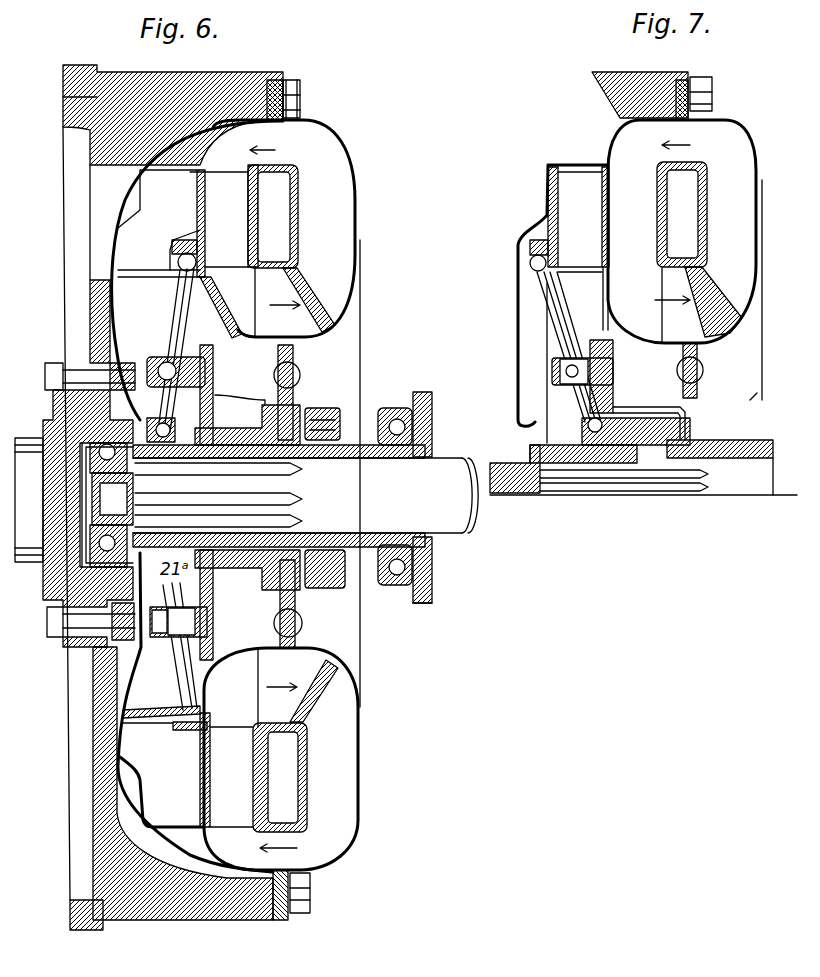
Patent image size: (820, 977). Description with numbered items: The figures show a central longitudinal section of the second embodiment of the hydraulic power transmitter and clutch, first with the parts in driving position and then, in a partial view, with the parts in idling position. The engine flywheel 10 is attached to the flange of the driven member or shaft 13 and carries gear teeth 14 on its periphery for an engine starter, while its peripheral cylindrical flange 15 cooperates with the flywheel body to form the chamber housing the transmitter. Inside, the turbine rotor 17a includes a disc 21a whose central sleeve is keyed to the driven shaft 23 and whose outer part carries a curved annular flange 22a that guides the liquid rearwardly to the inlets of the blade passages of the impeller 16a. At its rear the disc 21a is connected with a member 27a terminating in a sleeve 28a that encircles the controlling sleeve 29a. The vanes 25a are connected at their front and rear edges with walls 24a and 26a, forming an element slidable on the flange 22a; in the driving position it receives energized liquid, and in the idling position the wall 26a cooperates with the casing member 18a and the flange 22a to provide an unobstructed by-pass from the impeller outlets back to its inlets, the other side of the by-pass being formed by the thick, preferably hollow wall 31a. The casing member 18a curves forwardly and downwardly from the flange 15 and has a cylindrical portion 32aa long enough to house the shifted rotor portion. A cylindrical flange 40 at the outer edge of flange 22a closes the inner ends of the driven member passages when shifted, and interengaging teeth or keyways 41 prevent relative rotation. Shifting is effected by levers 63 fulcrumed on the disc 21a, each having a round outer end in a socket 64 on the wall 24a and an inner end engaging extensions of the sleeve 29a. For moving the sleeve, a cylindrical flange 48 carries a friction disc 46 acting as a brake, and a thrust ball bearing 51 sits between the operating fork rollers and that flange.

In FIG. 6, the engine flywheel 10 is at (90, 303).
In FIG. 6, the driven member or shaft 13 is at (26, 445).
In FIG. 6, the gear teeth 14 is at (92, 72).
In FIG. 6, the peripheral cylindrical flange 15 is at (258, 72).
In FIG. 6, the impeller 16a is at (284, 228).
In FIG. 6, the turbine rotor 17a is at (219, 219).
In FIG. 6, the casing member 18a is at (207, 142).
In FIG. 7, the casing member 18a is at (627, 133).
In FIG. 6, the disc 21a is at (207, 372).
In FIG. 7, the disc 21a is at (616, 366).
In FIG. 6, the curved annular flange 22a is at (240, 322).
In FIG. 7, the curved annular flange 22a is at (613, 308).
In FIG. 6, the driven shaft 23 is at (452, 524).
In FIG. 7, the driven shaft 23 is at (643, 470).
In FIG. 6, the wall 24a is at (197, 220).
In FIG. 7, the wall 24a is at (558, 207).
In FIG. 6, the vanes 25a is at (217, 188).
In FIG. 6, the wall 26a is at (248, 182).
In FIG. 7, the wall 26a is at (602, 200).
In FIG. 6, the member 27a is at (265, 405).
In FIG. 7, the member 27a is at (683, 423).
In FIG. 6, the sleeve 28a is at (347, 440).
In FIG. 6, the controlling sleeve 29a is at (369, 550).
In FIG. 7, the controlling sleeve 29a is at (763, 440).
In FIG. 6, the wall 31a is at (298, 180).
In FIG. 7, the wall 31a is at (682, 214).
In FIG. 7, the cylindrical portion 32aa is at (584, 164).
In FIG. 6, the cylindrical flange 40 is at (150, 278).
In FIG. 6, the interengaging teeth or keyways 41 is at (208, 724).
In FIG. 6, the friction disc 46 is at (432, 590).
In FIG. 6, the cylindrical flange 48 is at (421, 604).
In FIG. 6, the thrust ball bearing 51 is at (397, 419).
In FIG. 6, the levers 63 is at (178, 322).
In FIG. 7, the levers 63 is at (550, 327).
In FIG. 6, the socket 64 is at (176, 260).
In FIG. 7, the socket 64 is at (535, 228).